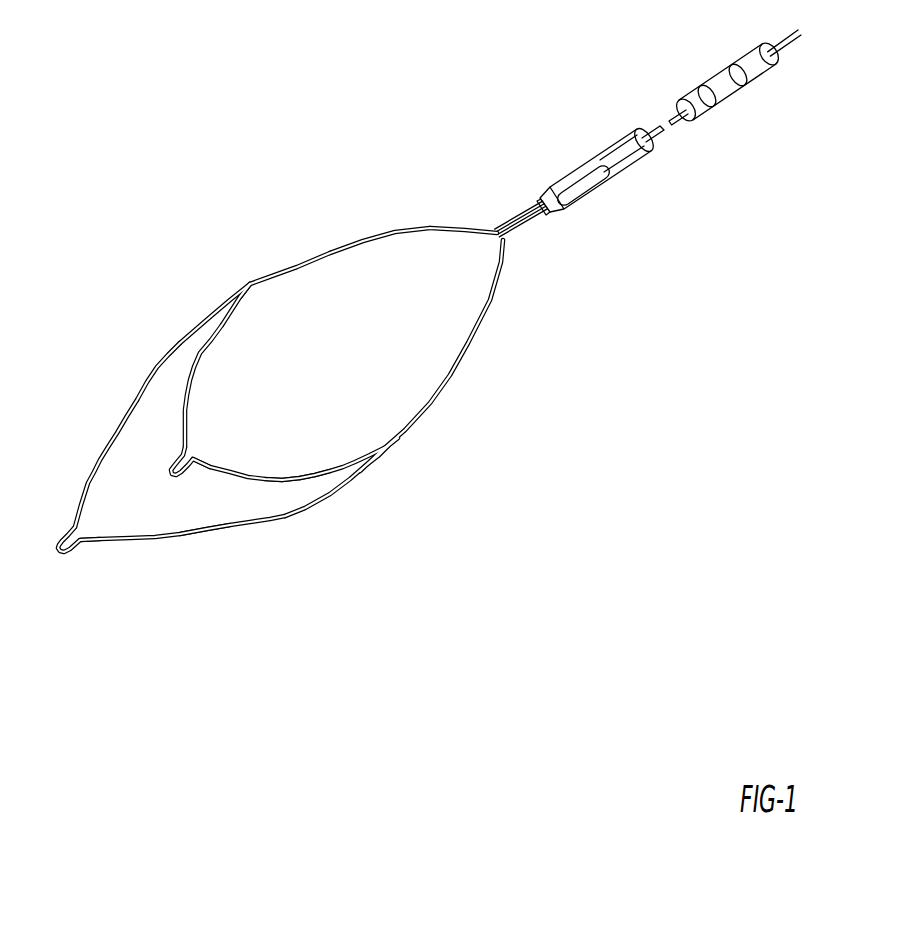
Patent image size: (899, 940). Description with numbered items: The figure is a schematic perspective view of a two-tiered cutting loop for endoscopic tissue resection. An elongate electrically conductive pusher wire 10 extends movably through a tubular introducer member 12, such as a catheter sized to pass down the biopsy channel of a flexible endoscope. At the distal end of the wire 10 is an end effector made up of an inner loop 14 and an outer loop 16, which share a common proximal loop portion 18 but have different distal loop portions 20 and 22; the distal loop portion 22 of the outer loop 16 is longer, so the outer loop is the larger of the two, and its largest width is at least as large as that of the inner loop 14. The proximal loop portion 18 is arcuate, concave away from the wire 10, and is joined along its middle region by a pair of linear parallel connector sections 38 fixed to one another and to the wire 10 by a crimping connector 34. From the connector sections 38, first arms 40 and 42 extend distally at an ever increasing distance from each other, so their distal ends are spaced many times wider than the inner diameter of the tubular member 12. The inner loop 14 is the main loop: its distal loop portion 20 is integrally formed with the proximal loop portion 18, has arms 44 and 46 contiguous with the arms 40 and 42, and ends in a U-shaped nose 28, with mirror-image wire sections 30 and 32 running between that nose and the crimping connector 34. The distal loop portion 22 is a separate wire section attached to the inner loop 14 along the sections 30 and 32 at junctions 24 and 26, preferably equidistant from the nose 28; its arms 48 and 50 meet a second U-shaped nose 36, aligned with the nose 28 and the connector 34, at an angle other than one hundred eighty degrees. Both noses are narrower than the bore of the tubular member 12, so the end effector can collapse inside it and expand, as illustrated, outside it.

The pusher wire 10 is at (675, 124).
The tubular introducer member 12 is at (619, 141).
The inner loop 14 is at (192, 338).
The outer loop 16 is at (153, 366).
The proximal loop portion 18 is at (447, 226).
The distal loop portion of inner loop 20 is at (264, 474).
The distal loop portion of outer loop 22 is at (208, 527).
The junction 24 is at (246, 284).
The junction 26 is at (389, 446).
The nose 28 is at (174, 463).
The wire section 30 is at (241, 300).
The wire section 32 is at (352, 462).
The crimping connector 34 is at (575, 188).
The nose 36 is at (58, 543).
The connector sections 38 is at (514, 218).
The first arm 40 is at (348, 239).
The first arm 42 is at (472, 338).
The arm 44 is at (184, 403).
The arm 46 is at (302, 481).
The arm 48 is at (103, 451).
The arm 50 is at (237, 527).